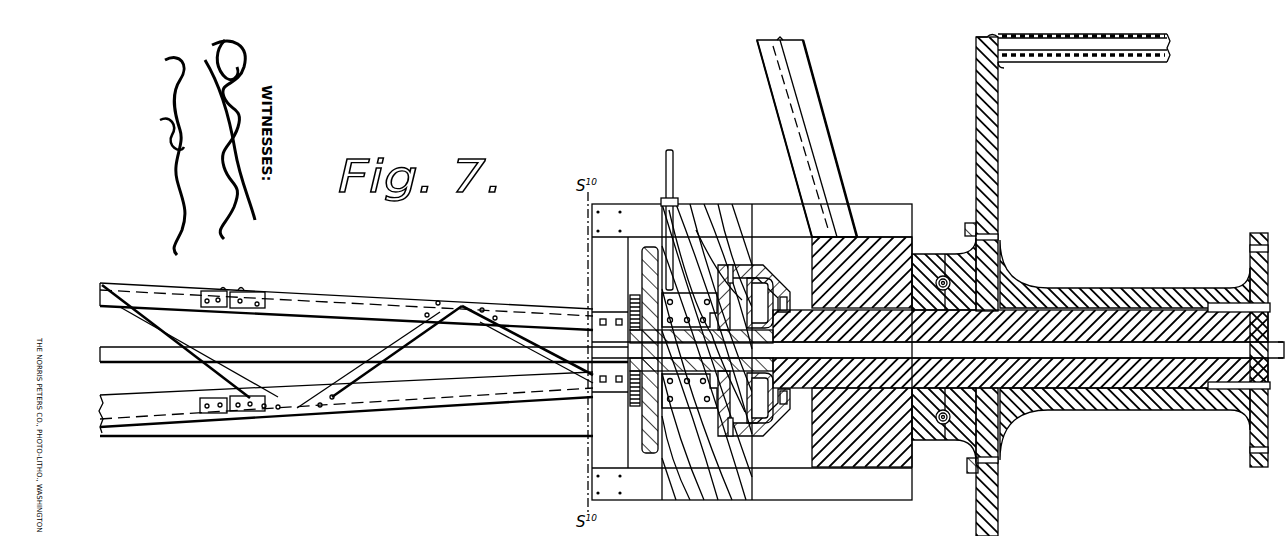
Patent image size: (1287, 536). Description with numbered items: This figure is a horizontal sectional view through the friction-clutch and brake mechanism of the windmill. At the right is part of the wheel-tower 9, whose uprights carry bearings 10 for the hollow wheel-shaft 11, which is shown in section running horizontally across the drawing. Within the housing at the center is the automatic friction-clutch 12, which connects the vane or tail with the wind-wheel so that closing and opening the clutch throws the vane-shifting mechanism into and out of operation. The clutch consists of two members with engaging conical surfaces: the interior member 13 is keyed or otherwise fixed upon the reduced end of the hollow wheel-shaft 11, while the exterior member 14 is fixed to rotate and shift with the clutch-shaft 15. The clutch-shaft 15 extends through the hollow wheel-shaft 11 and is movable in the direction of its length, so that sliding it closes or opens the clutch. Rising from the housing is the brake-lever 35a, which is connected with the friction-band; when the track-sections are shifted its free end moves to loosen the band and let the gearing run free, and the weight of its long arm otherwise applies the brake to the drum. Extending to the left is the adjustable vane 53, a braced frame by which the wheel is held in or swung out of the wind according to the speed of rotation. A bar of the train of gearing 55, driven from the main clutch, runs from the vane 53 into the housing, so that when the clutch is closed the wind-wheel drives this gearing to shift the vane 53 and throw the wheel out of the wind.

The wheel-tower 9 is at (837, 168).
The bearings 10 is at (885, 247).
The hollow wheel-shaft 11 is at (1108, 323).
The automatic friction-clutch 12 is at (760, 260).
The interior clutch member 13 is at (755, 408).
The exterior clutch member 14 is at (800, 270).
The clutch-shaft 15 is at (1122, 343).
The brake-lever 35a is at (673, 152).
The adjustable vane 53 is at (346, 346).
The train of gearing 55 is at (287, 345).